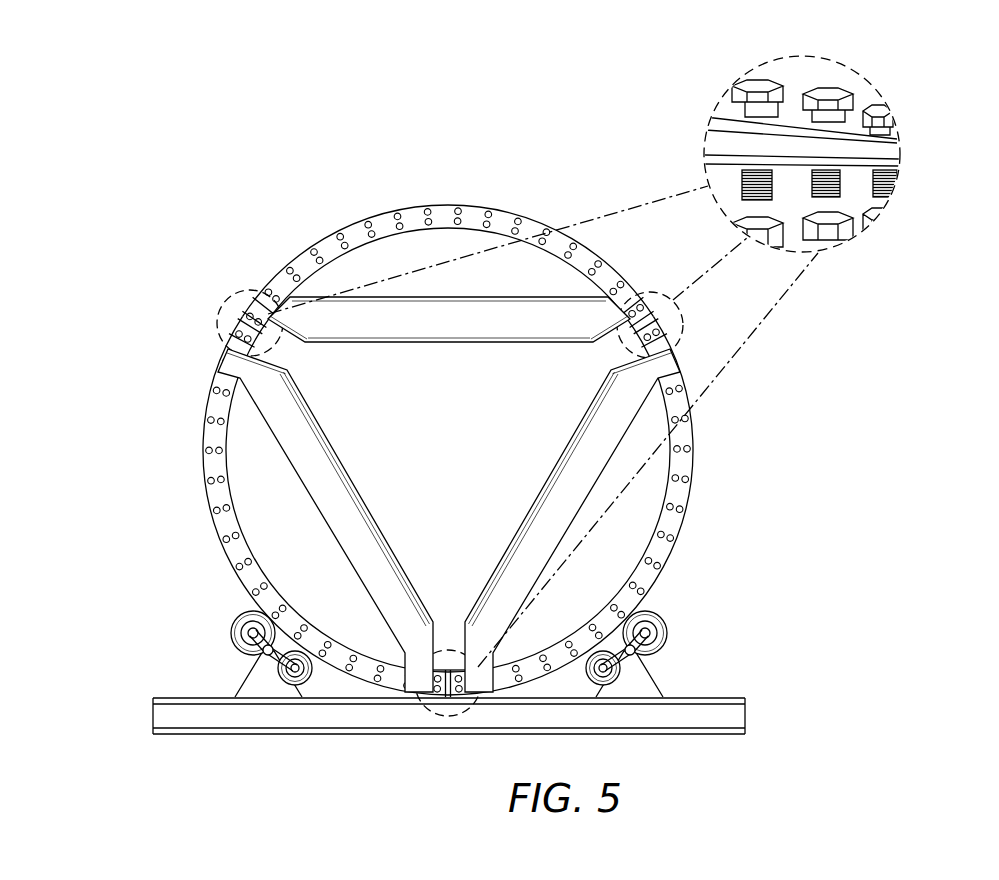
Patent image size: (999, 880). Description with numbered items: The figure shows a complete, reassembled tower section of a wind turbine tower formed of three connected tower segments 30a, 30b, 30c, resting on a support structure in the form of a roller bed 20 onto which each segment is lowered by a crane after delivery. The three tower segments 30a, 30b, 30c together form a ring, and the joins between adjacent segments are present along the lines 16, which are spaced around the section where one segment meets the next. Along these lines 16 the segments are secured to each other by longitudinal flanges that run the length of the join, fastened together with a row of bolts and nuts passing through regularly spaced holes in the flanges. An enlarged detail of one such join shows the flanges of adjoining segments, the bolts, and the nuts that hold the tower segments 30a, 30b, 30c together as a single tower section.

The lines 16 is at (229, 306).
The roller bed 20 is at (241, 728).
The tower segment 30a is at (467, 210).
The tower segment 30b is at (218, 520).
The tower segment 30c is at (676, 531).